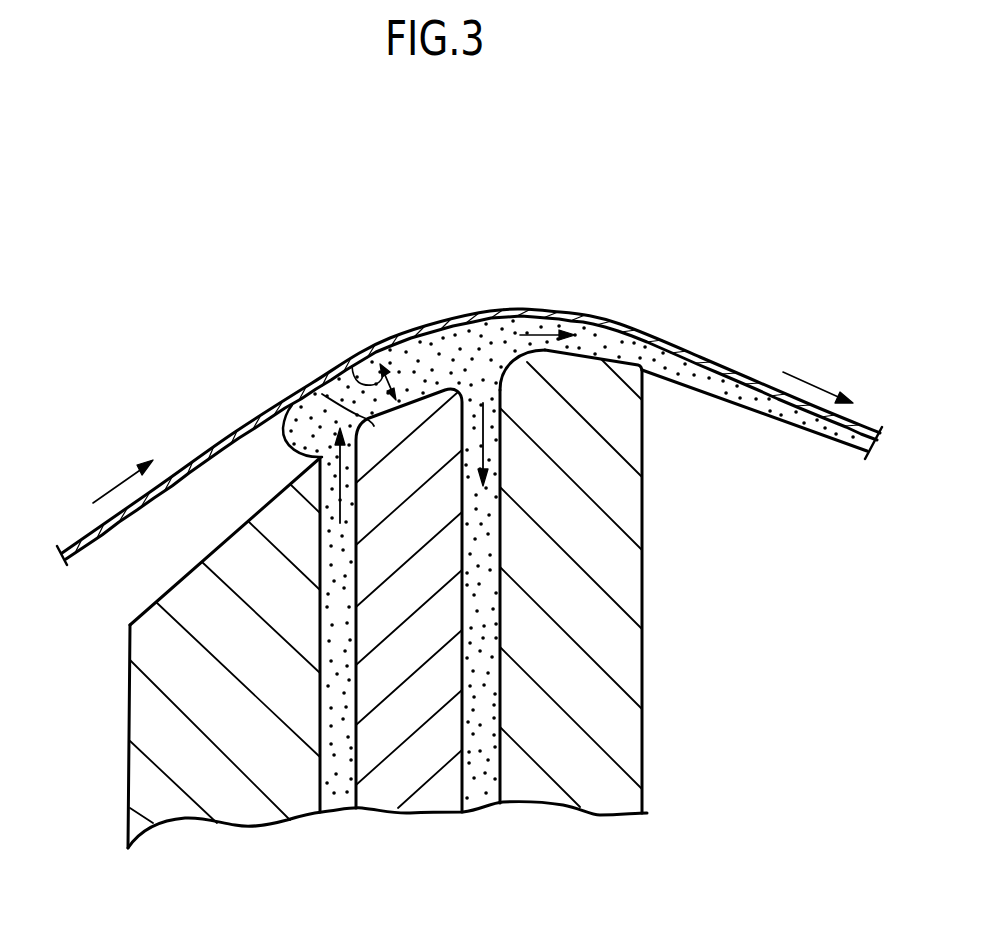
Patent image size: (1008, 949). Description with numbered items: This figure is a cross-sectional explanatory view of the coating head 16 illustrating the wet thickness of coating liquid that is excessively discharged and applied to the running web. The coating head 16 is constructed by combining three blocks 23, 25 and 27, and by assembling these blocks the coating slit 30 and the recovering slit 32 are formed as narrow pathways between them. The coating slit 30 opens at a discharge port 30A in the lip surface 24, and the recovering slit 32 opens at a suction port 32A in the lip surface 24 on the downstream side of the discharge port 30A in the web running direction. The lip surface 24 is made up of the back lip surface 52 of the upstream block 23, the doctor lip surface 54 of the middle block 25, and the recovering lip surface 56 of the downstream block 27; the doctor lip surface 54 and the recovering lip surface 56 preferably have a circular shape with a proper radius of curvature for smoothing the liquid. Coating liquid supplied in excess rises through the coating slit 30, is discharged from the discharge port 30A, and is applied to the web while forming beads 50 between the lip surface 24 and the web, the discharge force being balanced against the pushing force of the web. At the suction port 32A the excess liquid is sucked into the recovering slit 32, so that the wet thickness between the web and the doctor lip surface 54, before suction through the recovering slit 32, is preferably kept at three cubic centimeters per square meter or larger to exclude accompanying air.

The coating head 16 is at (213, 447).
The block 23 is at (235, 768).
The lip surface 24 is at (437, 375).
The block 25 is at (410, 778).
The block 27 is at (577, 762).
The coating slit 30 is at (320, 635).
The discharge port 30A is at (288, 402).
The recovering slit 32 is at (500, 540).
The suction port 32A is at (484, 381).
The beads 50 is at (389, 347).
The back lip surface 52 is at (172, 590).
The doctor lip surface 54 is at (313, 384).
The recovering lip surface 56 is at (508, 346).